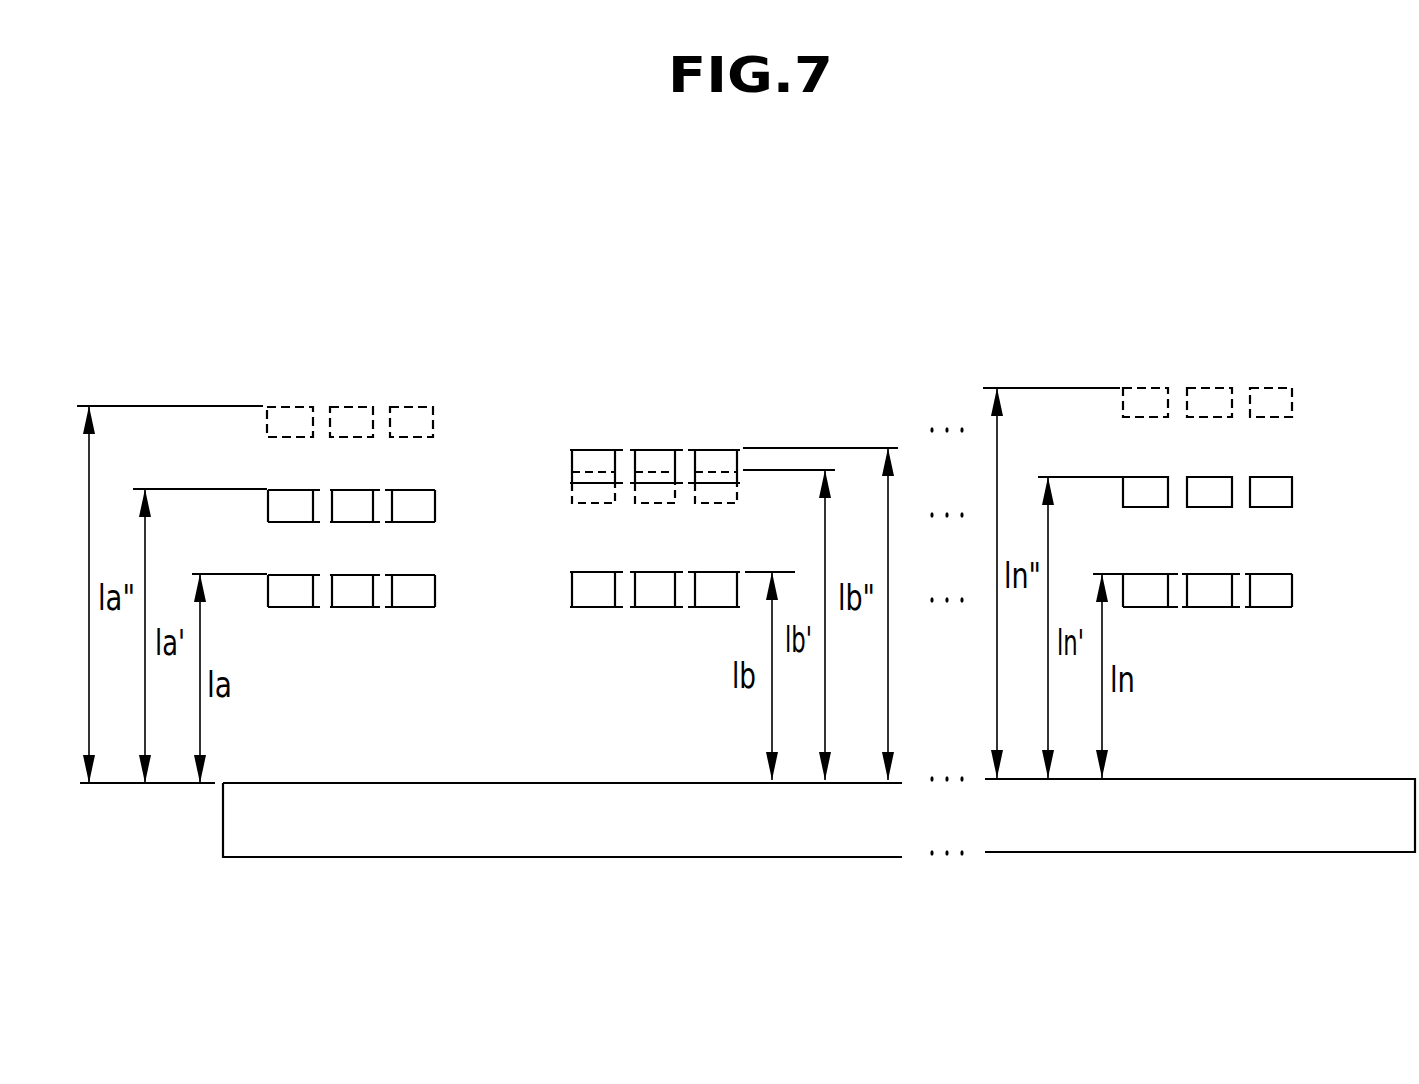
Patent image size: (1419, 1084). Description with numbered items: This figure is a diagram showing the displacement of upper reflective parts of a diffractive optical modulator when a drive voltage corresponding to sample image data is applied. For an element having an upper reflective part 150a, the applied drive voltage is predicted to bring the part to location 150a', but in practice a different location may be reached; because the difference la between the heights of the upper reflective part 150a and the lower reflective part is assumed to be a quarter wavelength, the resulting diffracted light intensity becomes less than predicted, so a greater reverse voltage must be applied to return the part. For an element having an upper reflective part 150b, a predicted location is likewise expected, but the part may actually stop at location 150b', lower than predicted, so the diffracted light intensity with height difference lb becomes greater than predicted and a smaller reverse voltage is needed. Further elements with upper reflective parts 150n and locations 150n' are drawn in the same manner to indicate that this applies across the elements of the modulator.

The upper reflective part 150a is at (394, 567).
The predicted location of upper reflective part 150a' is at (395, 481).
The upper reflective part 150b is at (655, 559).
The actual location of upper reflective part 150b' is at (667, 437).
The n-th light emitting element group (first row) 150n is at (1249, 563).
The n-th light emitting element group (second row) 150n' is at (1252, 463).